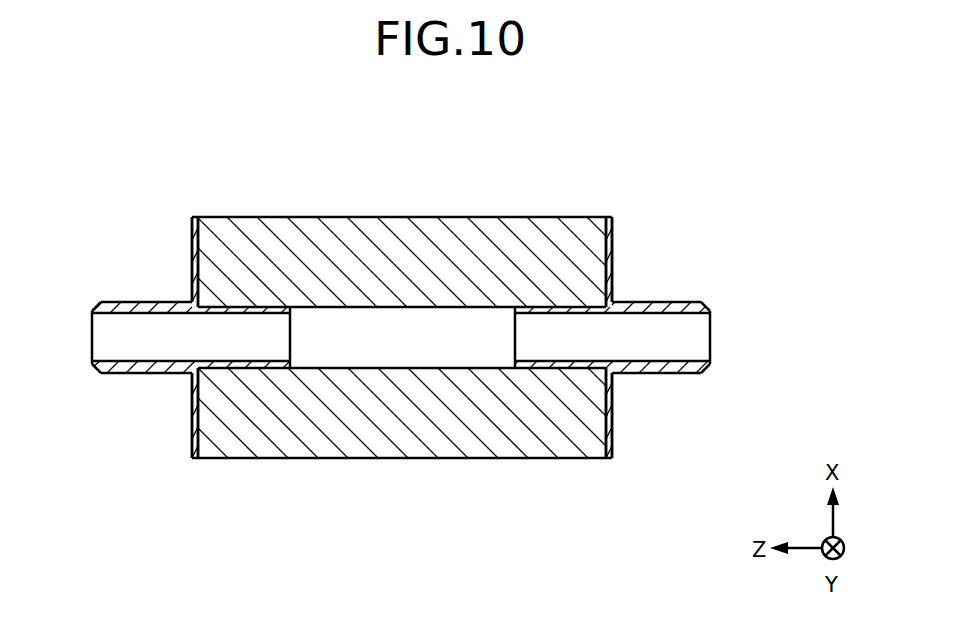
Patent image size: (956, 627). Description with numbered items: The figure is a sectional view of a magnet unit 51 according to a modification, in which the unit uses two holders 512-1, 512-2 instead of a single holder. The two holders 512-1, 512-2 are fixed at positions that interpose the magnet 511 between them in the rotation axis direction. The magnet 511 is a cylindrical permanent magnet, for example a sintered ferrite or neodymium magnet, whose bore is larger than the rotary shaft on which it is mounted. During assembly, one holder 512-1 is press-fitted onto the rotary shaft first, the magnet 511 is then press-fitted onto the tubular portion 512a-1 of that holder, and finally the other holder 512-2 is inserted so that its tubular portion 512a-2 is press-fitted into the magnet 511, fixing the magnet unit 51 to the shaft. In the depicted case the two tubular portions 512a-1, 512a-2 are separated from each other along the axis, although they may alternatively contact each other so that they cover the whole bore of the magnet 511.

The magnet unit 51 is at (612, 148).
The magnet 511 is at (425, 240).
The holder 512-1 is at (125, 244).
The holder 512-2 is at (664, 242).
The tubular portion 512a-1 is at (243, 307).
The tubular portion 512a-2 is at (555, 307).